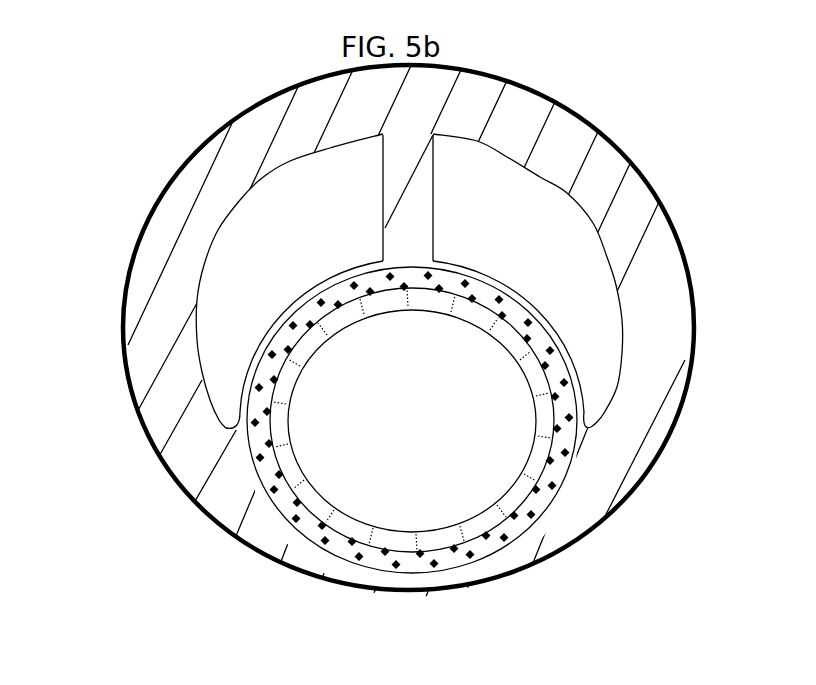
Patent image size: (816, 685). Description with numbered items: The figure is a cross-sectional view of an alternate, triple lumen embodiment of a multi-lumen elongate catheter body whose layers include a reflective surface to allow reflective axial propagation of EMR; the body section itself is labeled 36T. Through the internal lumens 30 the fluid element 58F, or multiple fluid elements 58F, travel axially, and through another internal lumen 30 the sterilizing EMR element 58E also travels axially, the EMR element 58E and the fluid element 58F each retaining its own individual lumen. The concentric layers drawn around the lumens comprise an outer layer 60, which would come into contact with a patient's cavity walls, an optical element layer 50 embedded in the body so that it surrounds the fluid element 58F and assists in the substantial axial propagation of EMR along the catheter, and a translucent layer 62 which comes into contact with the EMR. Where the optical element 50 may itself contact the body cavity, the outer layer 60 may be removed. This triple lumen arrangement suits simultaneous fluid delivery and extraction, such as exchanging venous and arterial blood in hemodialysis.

The internal lumen 30 is at (330, 210).
The outer housing wall 36T is at (668, 450).
The optical element 50 is at (530, 514).
The sterilizing EMR element 58E is at (320, 427).
The fluid element 58F is at (247, 258).
The outer layer 60 is at (153, 372).
The translucent layer 62 is at (320, 478).